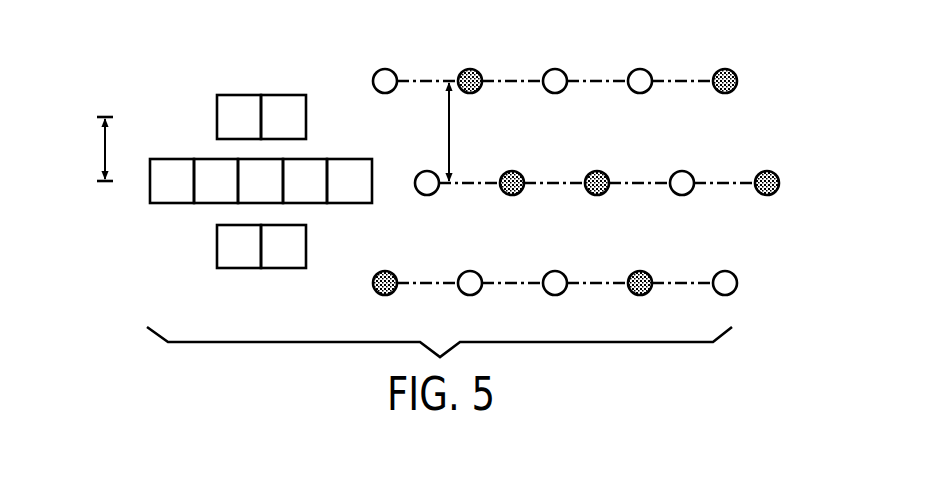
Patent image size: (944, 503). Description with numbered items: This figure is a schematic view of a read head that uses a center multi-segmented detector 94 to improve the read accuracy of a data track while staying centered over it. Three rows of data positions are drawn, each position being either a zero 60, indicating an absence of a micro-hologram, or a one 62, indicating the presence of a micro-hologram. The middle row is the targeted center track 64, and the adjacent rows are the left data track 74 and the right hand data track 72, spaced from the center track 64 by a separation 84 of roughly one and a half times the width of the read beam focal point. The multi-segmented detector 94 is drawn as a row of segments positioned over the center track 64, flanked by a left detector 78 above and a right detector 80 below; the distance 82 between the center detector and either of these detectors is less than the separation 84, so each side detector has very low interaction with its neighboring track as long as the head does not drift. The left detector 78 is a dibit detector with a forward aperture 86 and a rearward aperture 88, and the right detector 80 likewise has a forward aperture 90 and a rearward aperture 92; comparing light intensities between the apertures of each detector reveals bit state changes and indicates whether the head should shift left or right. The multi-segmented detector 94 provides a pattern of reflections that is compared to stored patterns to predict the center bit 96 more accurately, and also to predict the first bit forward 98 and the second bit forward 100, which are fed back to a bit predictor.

The zero 60 is at (394, 72).
The one 62 is at (466, 70).
The center track 64 is at (724, 181).
The data track 72 is at (684, 281).
The data track 74 is at (560, 57).
The left detector 78 is at (255, 95).
The right detector 80 is at (252, 257).
The distance 82 is at (103, 142).
The separation 84 is at (452, 118).
The forward aperture 86 is at (306, 118).
The rearward aperture 88 is at (232, 95).
The forward aperture 90 is at (307, 240).
The rearward aperture 92 is at (240, 268).
The center multi-segmented detector 94 is at (245, 180).
The center bit 96 is at (268, 159).
The first bit forward 98 is at (302, 203).
The second bit forward 100 is at (268, 180).